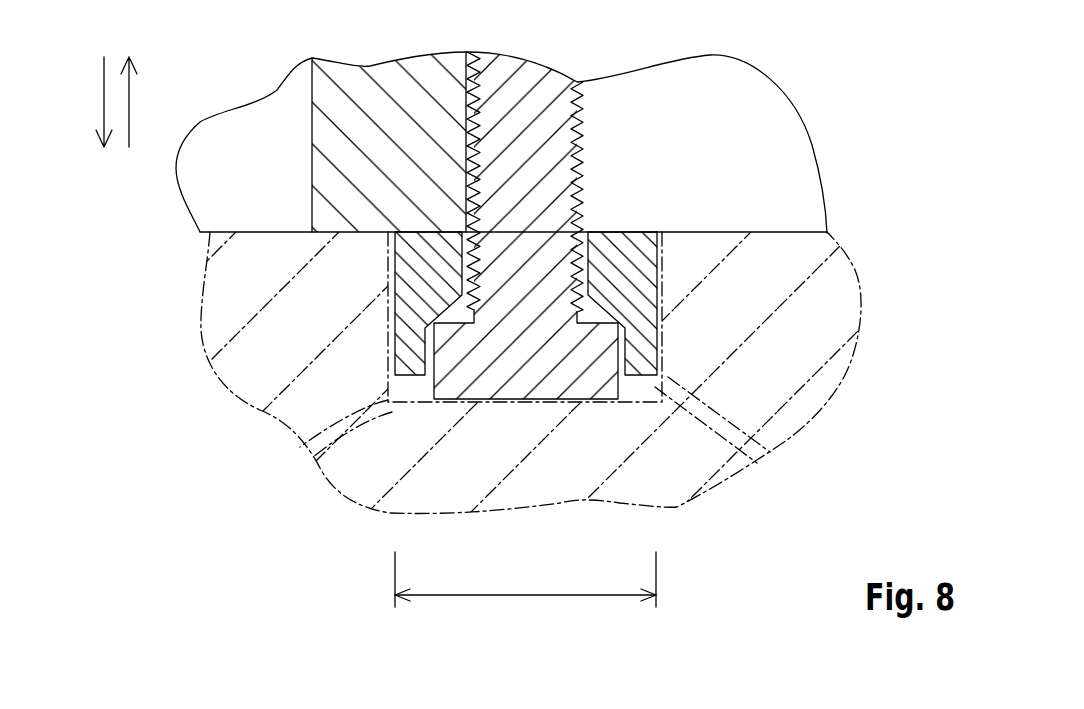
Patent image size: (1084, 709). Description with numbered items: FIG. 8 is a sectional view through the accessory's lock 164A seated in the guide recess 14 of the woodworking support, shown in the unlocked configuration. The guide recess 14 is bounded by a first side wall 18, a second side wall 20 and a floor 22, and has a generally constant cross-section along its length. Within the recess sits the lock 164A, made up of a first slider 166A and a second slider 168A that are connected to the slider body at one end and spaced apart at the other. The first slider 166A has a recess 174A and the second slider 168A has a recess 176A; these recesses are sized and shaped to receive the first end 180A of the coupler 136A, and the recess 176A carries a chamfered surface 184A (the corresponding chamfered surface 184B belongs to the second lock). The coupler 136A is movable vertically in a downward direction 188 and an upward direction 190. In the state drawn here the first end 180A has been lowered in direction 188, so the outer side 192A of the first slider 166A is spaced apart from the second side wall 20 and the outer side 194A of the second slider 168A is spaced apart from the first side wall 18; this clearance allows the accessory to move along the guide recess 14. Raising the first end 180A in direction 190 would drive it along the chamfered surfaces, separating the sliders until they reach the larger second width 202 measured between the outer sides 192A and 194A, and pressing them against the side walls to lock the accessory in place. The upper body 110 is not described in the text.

The upper body 110 is at (403, 128).
The coupler 136A is at (530, 118).
The recess 176A is at (468, 306).
The recess 174A is at (590, 304).
The chamfered surface 184B is at (603, 315).
The second slider 168A is at (420, 261).
The first slider 166A is at (646, 290).
The chamfered surface 184A is at (438, 311).
The lock 164A is at (700, 353).
The first side wall 18 is at (300, 447).
The second side wall 20 is at (757, 463).
The guide recess 14 is at (483, 425).
The floor 22 is at (590, 405).
The outer side 194A is at (413, 345).
The first end 180A is at (514, 354).
The outer side 192A is at (636, 380).
The second width 202 is at (585, 596).
The direction 188 is at (100, 97).
The direction 190 is at (133, 100).